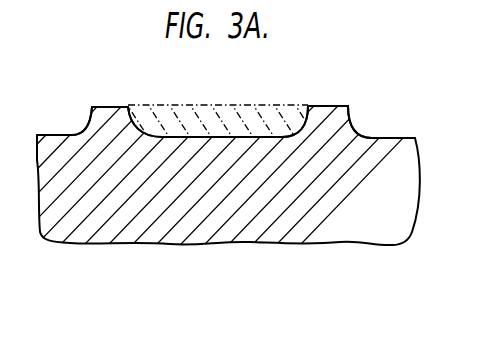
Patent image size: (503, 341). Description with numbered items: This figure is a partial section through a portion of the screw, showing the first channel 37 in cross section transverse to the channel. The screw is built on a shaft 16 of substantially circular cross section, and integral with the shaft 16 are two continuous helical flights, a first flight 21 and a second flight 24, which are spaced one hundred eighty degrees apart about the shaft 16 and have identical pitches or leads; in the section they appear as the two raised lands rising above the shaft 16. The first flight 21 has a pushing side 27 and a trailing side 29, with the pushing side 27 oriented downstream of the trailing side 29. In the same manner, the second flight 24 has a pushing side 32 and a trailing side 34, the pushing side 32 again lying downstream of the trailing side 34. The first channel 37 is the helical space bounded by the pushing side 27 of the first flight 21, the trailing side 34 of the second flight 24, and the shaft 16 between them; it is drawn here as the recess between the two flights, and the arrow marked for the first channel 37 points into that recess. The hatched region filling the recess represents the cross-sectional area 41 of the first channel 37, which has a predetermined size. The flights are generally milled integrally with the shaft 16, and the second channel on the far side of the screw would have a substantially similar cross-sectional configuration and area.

The shaft 16 is at (417, 219).
The first flight 21 is at (334, 106).
The second flight 24 is at (121, 106).
The pushing side 27 is at (301, 122).
The trailing side 29 is at (352, 122).
The pushing side 32 is at (84, 129).
The trailing side 34 is at (134, 124).
The first channel 37 is at (265, 81).
The cross-sectional area 41 is at (219, 111).